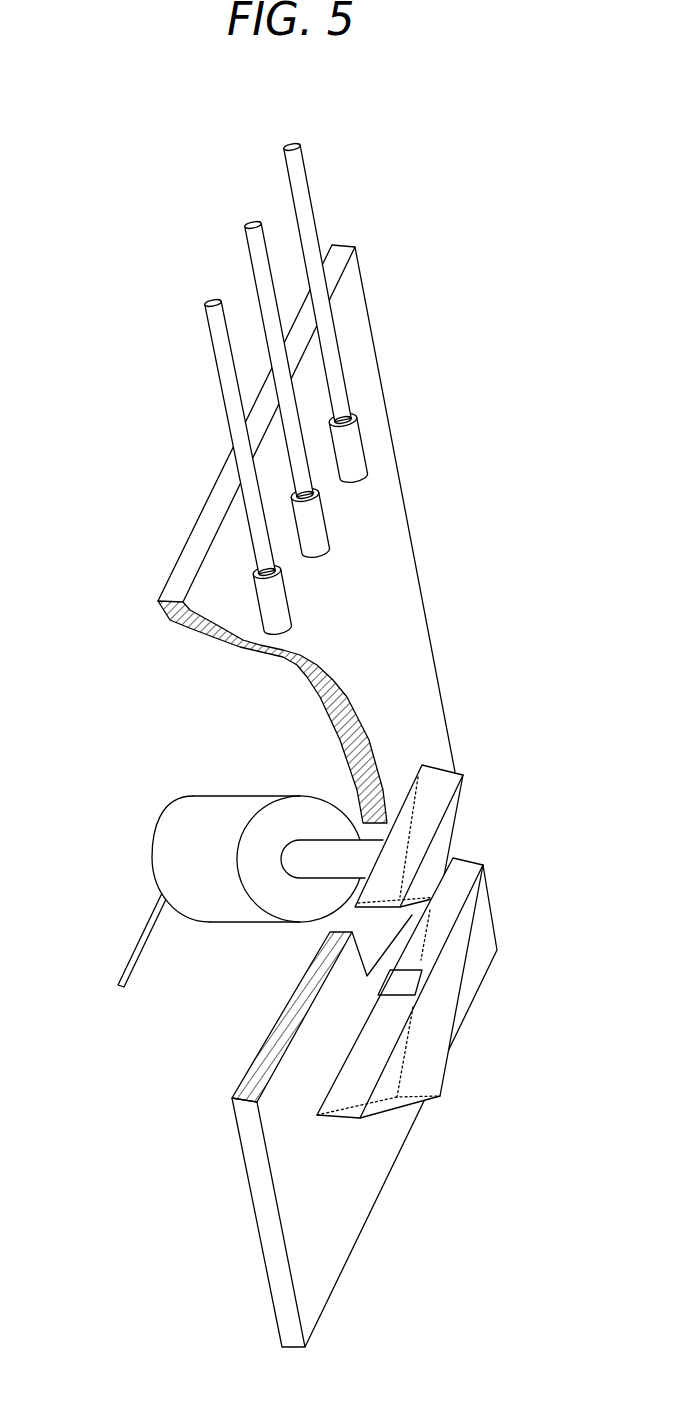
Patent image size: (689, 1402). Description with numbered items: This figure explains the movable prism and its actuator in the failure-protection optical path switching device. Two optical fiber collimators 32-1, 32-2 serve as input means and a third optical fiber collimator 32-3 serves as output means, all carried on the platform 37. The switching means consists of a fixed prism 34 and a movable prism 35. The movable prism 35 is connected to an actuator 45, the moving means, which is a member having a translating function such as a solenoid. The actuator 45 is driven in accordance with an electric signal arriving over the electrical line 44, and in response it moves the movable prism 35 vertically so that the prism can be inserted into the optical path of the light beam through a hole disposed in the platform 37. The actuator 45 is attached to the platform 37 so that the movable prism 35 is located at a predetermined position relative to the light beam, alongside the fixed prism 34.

The optical fiber collimator 32-1 is at (212, 342).
The optical fiber collimator 32-2 is at (247, 249).
The optical fiber collimator 32-3 is at (307, 189).
The fixed prism 34 is at (432, 1078).
The movable prism 35 is at (448, 823).
The platform 37 is at (332, 1268).
The electrical line 44 is at (133, 960).
The actuator 45 is at (163, 848).